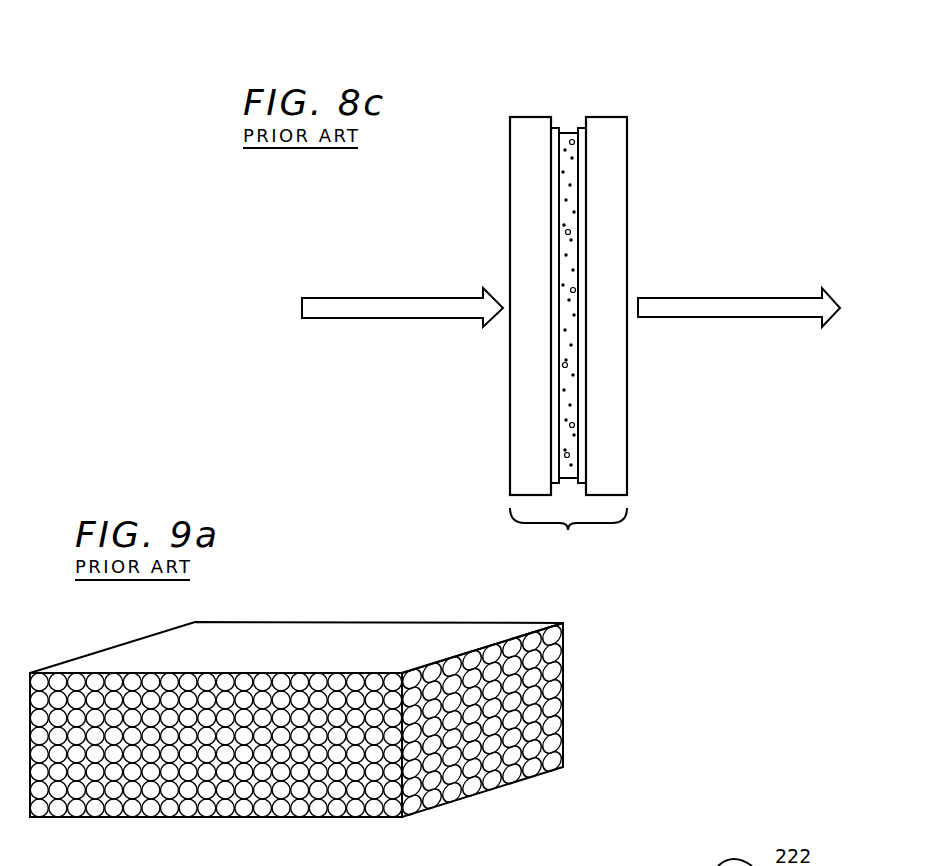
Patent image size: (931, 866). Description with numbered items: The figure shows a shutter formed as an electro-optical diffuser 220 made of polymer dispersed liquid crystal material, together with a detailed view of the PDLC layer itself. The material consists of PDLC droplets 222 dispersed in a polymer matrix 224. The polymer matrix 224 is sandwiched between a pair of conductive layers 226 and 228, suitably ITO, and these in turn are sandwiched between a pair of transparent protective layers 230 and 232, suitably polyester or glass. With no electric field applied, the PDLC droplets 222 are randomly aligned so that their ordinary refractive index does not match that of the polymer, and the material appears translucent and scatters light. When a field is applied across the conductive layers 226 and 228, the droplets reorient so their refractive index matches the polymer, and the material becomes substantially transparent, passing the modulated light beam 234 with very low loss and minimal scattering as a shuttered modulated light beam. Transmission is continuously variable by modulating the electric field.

In FIG. 8c, the electro-optical diffuser 220 is at (568, 530).
In FIG. 8c, the PDLC droplets 222 is at (561, 168).
In FIG. 9a, the PDLC droplets 222 is at (42, 683).
In FIG. 8c, the polymer matrix 224 is at (568, 133).
In FIG. 9a, the polymer matrix 224 is at (425, 632).
In FIG. 8c, the conductive layer 226 is at (555, 128).
In FIG. 8c, the conductive layer 228 is at (582, 128).
In FIG. 8c, the transparent protective layer 230 is at (528, 117).
In FIG. 8c, the transparent protective layer 232 is at (608, 117).
In FIG. 8c, the modulated light beam 234 is at (397, 318).